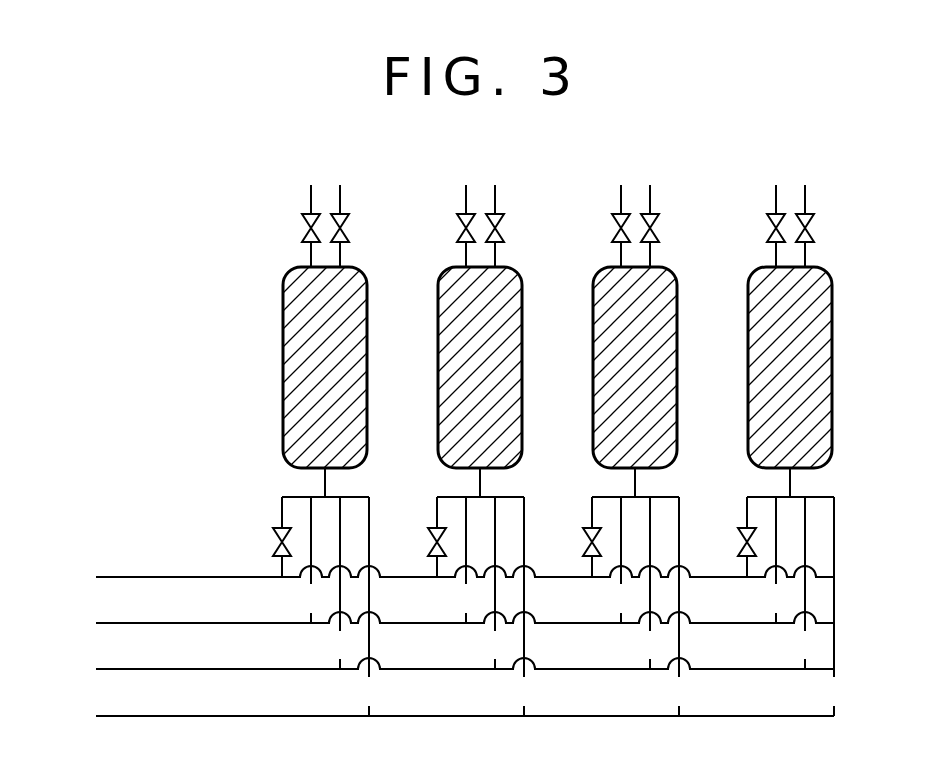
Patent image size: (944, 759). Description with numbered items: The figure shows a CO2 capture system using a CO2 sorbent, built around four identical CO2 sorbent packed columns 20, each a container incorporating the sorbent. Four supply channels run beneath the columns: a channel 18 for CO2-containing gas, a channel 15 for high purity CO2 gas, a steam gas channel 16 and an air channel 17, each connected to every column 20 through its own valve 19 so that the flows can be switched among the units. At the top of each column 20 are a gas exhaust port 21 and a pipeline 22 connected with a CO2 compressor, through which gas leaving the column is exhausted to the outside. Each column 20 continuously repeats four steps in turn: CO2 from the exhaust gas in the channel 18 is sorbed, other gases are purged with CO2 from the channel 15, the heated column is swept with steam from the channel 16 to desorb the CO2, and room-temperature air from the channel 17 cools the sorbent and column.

The channel for high purity CO2 gas 15 is at (105, 622).
The steam gas channel 16 is at (105, 668).
The air channel 17 is at (105, 715).
The channel for CO2-containing gas 18 is at (105, 576).
The valve 19 is at (273, 549).
The CO2 sorbent packed column 20 is at (450, 397).
The gas exhaust port 21 is at (309, 204).
The pipeline connected with CO2 compressor 22 is at (342, 193).